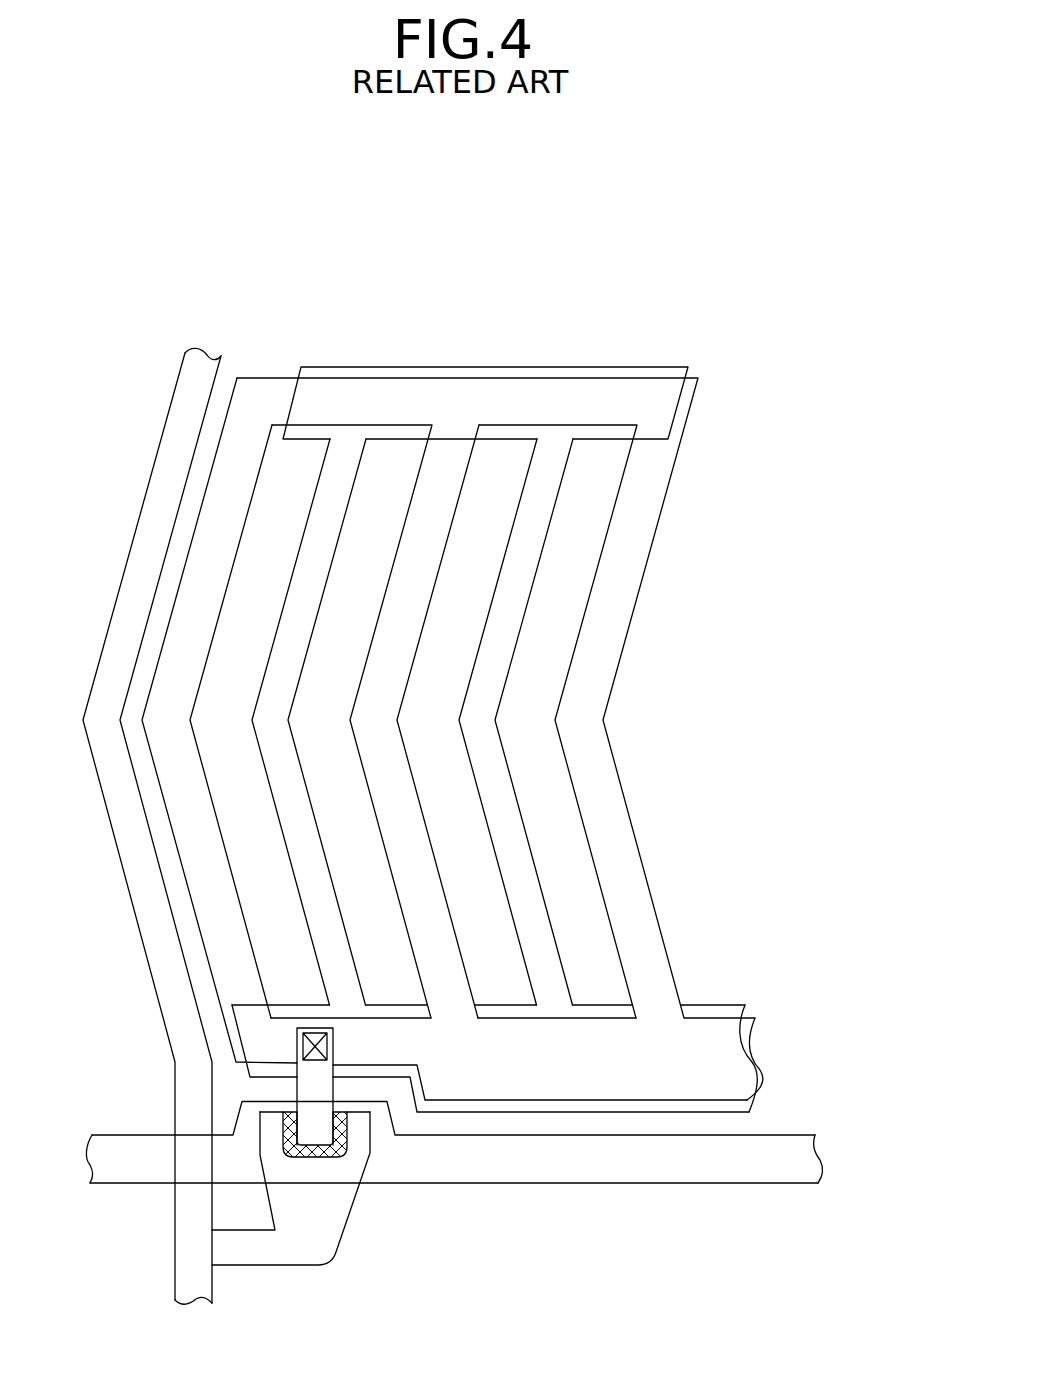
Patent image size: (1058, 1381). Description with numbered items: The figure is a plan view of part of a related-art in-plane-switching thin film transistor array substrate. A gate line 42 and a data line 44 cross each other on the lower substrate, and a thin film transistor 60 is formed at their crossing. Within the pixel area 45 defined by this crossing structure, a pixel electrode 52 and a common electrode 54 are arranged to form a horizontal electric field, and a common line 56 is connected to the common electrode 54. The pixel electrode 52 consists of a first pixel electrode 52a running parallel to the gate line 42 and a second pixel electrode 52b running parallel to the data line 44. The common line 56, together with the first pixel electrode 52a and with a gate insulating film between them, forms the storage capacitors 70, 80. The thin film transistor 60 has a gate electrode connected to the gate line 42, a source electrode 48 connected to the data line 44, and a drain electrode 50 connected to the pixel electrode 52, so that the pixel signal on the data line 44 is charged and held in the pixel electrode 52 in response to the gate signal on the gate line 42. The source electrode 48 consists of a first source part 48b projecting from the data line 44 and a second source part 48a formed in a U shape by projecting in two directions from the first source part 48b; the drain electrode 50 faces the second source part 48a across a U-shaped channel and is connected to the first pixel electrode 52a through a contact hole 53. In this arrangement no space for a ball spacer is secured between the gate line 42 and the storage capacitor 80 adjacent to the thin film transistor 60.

The gate line 42 is at (800, 1163).
The data line 44 is at (160, 510).
The pixel area 45 is at (205, 797).
The source electrode 48 is at (405, 1262).
The second source part 48a is at (360, 1150).
The first source part 48b is at (257, 1240).
The drain electrode 50 is at (325, 1100).
The pixel electrode 52 is at (757, 857).
The first pixel electrode 52a is at (598, 366).
The second pixel electrode 52b is at (510, 835).
The contact hole 53 is at (317, 1031).
The common electrode 54 is at (583, 717).
The common line 56 is at (698, 407).
The thin film transistor 60 is at (292, 1042).
The storage capacitor 70 is at (482, 364).
The storage capacitor 80 is at (542, 1116).